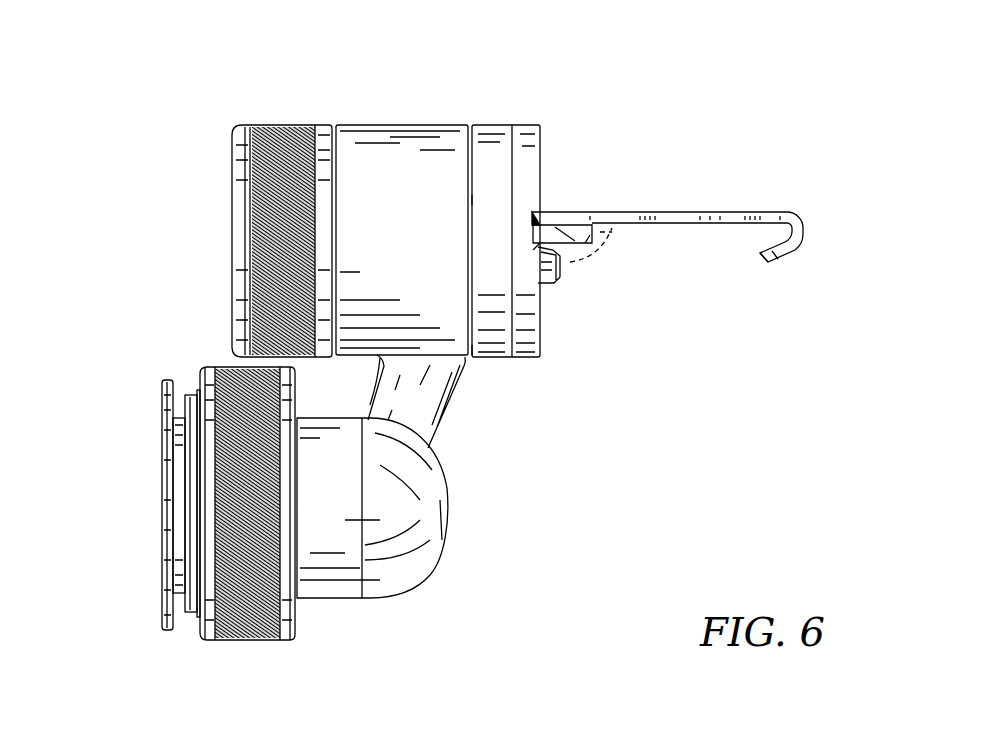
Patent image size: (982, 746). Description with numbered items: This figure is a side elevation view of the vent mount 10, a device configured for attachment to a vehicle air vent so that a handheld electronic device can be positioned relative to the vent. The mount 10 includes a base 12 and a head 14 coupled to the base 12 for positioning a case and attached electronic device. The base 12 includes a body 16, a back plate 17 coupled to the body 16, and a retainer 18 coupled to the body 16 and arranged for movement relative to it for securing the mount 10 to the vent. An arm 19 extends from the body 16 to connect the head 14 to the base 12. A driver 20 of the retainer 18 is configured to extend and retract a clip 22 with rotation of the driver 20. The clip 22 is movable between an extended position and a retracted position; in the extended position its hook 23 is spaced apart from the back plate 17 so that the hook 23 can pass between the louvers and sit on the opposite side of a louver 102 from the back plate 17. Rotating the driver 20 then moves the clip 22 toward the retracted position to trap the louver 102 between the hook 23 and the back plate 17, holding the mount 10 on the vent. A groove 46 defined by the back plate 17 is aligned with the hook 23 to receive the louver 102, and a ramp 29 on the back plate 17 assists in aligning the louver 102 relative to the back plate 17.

The vent mount 10 is at (789, 99).
The base 12 is at (478, 120).
The head 14 is at (157, 440).
The body 16 is at (407, 121).
The back plate 17 is at (526, 367).
The retainer 18 is at (380, 172).
The arm 19 is at (445, 428).
The driver 20 is at (229, 238).
The clip 22 is at (673, 207).
The hook 23 is at (785, 267).
The ramp 29 is at (561, 291).
The groove 46 is at (542, 224).
The louver 102 is at (577, 224).